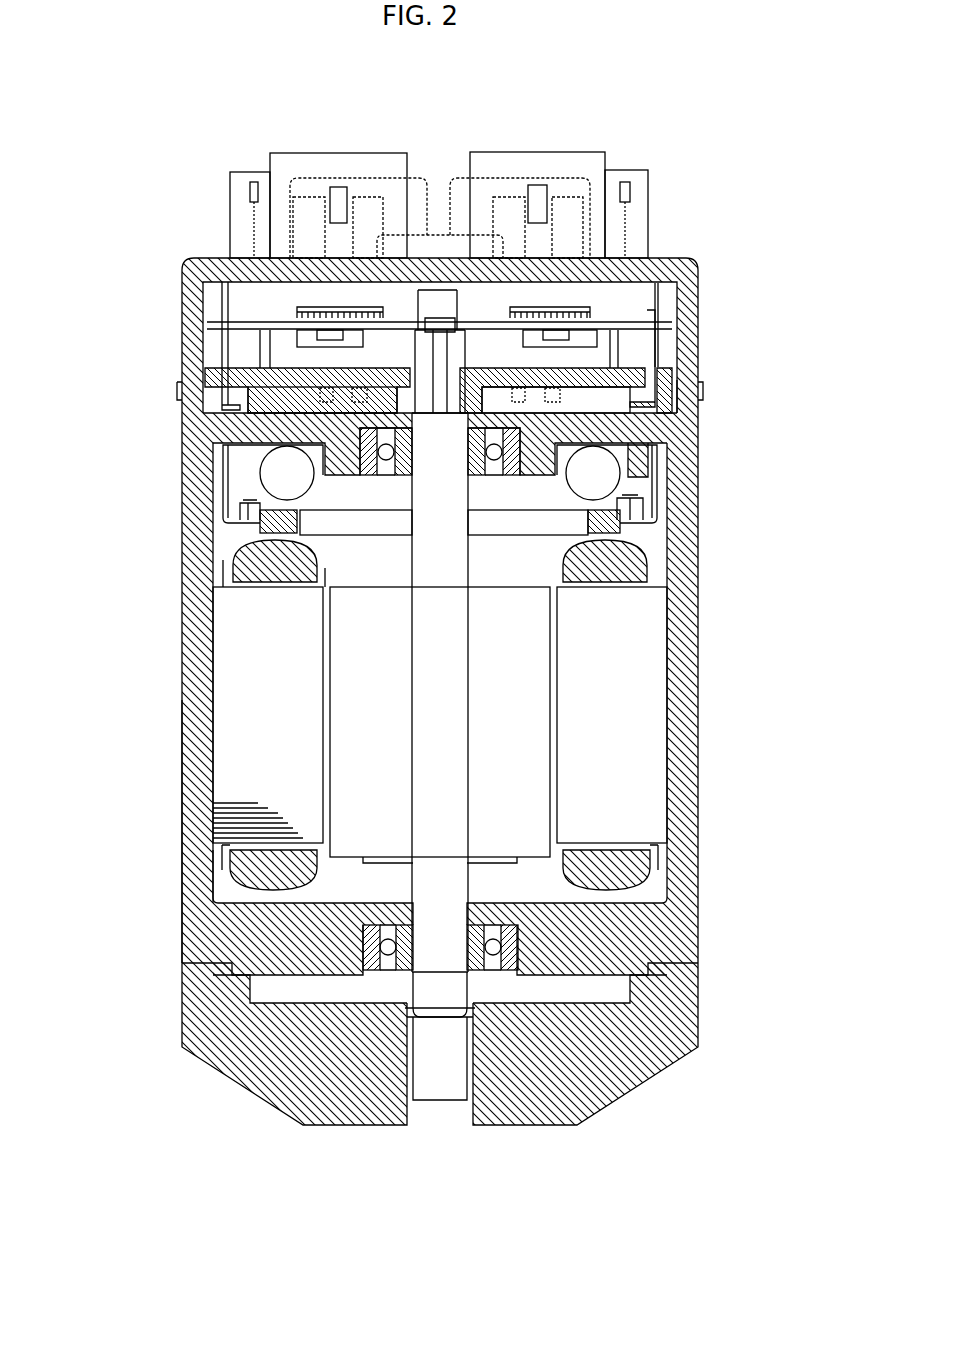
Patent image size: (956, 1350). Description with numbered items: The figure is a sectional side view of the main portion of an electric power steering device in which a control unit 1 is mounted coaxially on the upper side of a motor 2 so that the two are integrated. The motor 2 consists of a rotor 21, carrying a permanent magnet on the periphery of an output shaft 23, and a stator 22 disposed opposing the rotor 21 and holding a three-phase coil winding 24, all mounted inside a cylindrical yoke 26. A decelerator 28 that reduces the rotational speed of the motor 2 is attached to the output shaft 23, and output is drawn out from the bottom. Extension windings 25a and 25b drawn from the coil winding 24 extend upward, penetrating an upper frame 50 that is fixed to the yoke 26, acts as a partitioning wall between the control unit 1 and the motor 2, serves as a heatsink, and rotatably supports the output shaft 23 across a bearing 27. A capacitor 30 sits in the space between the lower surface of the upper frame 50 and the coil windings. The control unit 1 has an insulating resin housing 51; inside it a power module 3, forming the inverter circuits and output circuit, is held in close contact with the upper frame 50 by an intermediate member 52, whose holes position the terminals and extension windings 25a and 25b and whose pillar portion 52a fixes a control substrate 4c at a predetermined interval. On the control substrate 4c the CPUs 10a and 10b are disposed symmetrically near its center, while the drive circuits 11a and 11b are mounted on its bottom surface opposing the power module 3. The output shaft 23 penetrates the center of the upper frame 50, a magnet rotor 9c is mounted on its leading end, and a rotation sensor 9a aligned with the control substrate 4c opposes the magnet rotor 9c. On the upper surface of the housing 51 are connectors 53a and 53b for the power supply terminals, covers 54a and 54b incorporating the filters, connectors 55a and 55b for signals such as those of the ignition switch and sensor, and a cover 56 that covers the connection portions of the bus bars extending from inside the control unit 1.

The control unit 1 is at (183, 297).
The motor 2 is at (178, 742).
The power module 3 is at (270, 405).
The control substrate 4c is at (672, 326).
The rotation sensor 9a is at (270, 405).
The magnet rotor 9c is at (440, 320).
The CPU 10a is at (295, 315).
The CPU 10b is at (588, 312).
The drive circuit 11a is at (302, 338).
The drive circuit 11b is at (603, 345).
The rotor 21 is at (540, 748).
The stator 22 is at (228, 776).
The output shaft 23 is at (462, 885).
The 3-phase coil winding 24 is at (232, 565).
The extension winding 25a is at (243, 518).
The extension winding 25b is at (655, 515).
The yoke 26 is at (183, 880).
The bearing 27 is at (482, 475).
The decelerator 28 is at (184, 1012).
The capacitor 30 is at (262, 477).
The upper frame 50 is at (180, 436).
The housing 51 is at (198, 362).
The intermediate member 52 is at (701, 392).
The pillar portion 52a is at (652, 290).
The connector 53a is at (312, 153).
The connector 53b is at (604, 152).
The cover 54a is at (375, 178).
The cover 54b is at (458, 178).
The connector 55a is at (250, 172).
The connector 55b is at (634, 170).
The cover 56 is at (442, 233).